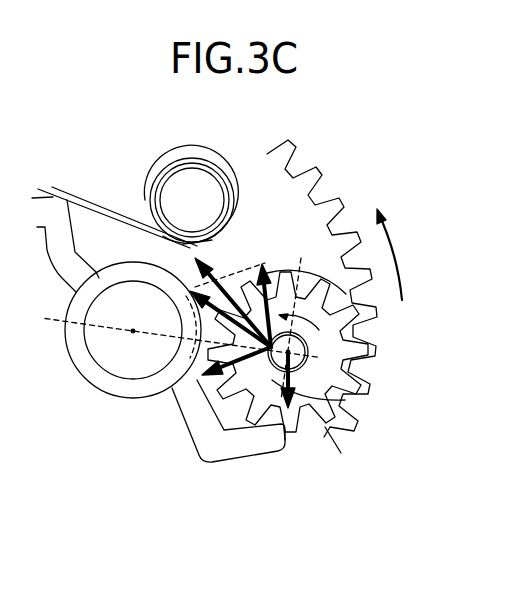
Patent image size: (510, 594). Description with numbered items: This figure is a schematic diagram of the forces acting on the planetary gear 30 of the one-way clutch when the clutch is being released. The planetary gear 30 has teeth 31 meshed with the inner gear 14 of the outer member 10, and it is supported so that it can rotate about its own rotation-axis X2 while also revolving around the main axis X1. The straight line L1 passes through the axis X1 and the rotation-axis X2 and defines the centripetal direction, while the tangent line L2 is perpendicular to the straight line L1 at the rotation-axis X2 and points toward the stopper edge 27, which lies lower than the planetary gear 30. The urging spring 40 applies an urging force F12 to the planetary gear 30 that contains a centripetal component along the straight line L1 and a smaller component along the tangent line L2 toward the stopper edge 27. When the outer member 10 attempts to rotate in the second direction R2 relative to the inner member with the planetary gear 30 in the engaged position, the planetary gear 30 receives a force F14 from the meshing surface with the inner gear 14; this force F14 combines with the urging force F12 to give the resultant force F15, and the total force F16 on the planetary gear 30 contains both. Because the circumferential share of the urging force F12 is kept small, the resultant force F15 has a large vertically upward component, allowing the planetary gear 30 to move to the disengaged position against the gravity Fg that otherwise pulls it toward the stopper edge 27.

The outer member 10 is at (277, 169).
The inner gear 14 is at (310, 184).
The stopper edge 27 is at (287, 440).
The planetary gear 30 is at (355, 350).
The teeth 31 is at (303, 428).
The urging spring 40 is at (113, 220).
The axis X1 is at (125, 346).
The rotation-axis X2 is at (311, 369).
The straight line L1 is at (166, 333).
The tangent line L2 is at (256, 312).
The second direction R2 is at (405, 254).
The force F16 is at (221, 282).
The force F14 is at (262, 263).
The resultant force F15 is at (196, 373).
The urging force F12 is at (248, 402).
The gravity Fg is at (330, 427).